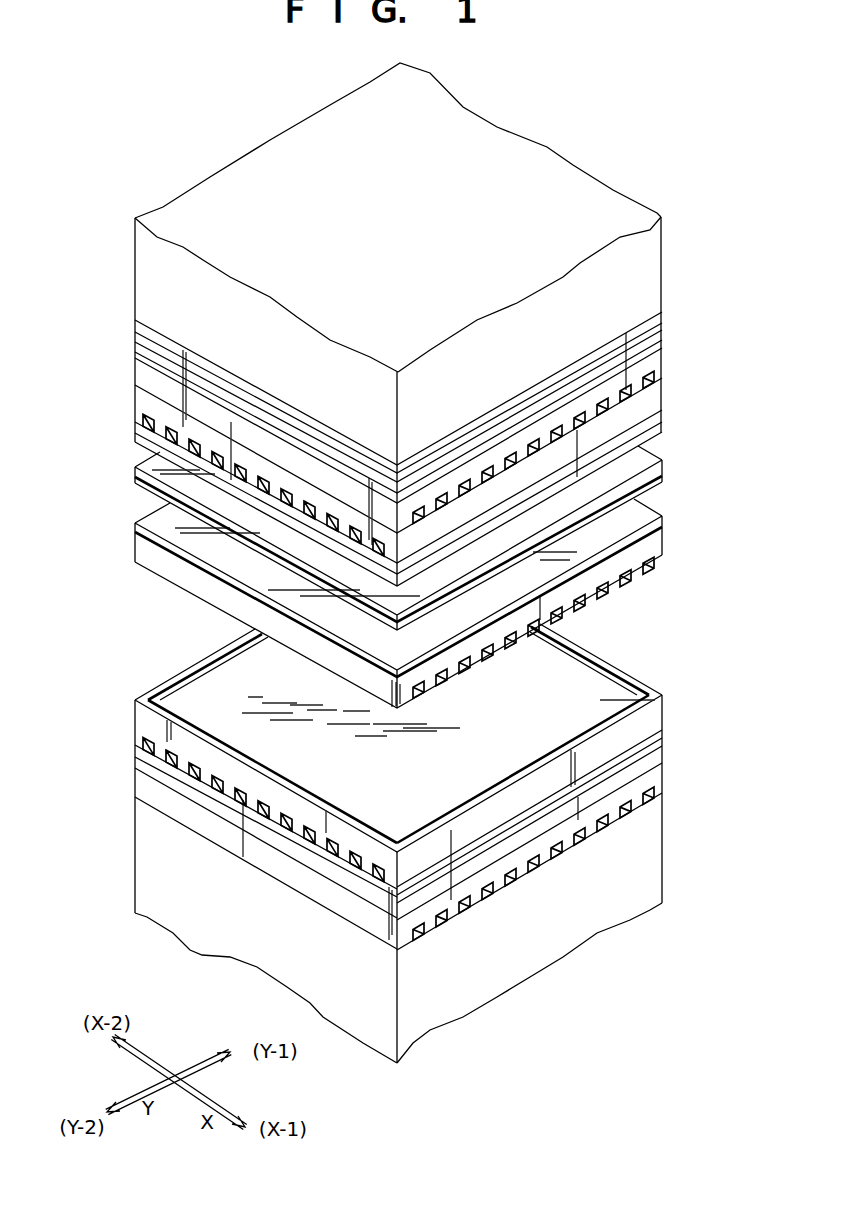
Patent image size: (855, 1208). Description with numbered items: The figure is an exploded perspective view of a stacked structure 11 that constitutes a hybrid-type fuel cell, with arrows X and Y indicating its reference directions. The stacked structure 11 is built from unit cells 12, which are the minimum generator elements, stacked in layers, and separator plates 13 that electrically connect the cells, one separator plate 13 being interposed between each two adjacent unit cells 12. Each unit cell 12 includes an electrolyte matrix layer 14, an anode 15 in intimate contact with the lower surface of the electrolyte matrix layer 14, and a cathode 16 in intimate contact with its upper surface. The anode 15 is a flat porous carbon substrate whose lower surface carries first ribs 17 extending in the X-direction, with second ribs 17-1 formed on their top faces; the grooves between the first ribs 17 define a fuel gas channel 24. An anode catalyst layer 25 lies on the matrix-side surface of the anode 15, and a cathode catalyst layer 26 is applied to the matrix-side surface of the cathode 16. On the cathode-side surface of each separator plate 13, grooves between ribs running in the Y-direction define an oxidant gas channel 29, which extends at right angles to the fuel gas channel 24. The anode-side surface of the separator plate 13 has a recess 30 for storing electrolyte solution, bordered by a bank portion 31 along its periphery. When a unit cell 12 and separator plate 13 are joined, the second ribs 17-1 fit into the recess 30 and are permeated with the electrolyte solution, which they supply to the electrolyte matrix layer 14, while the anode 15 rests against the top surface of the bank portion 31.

The stacked structure 11 is at (683, 645).
The unit cell 12 is at (676, 313).
The separator plate 13 is at (665, 391).
The electrolyte matrix layer 14 is at (135, 346).
The anode 15 is at (135, 373).
The cathode 16 is at (135, 322).
The first ribs 17 is at (630, 574).
The second ribs 17-1 is at (621, 584).
The fuel gas channel 24 is at (516, 472).
The anode catalyst layer 25 is at (135, 525).
The cathode catalyst layer 26 is at (135, 466).
The oxidant gas channel 29 is at (300, 512).
The recess 30 is at (614, 690).
The bank portion 31 is at (180, 680).